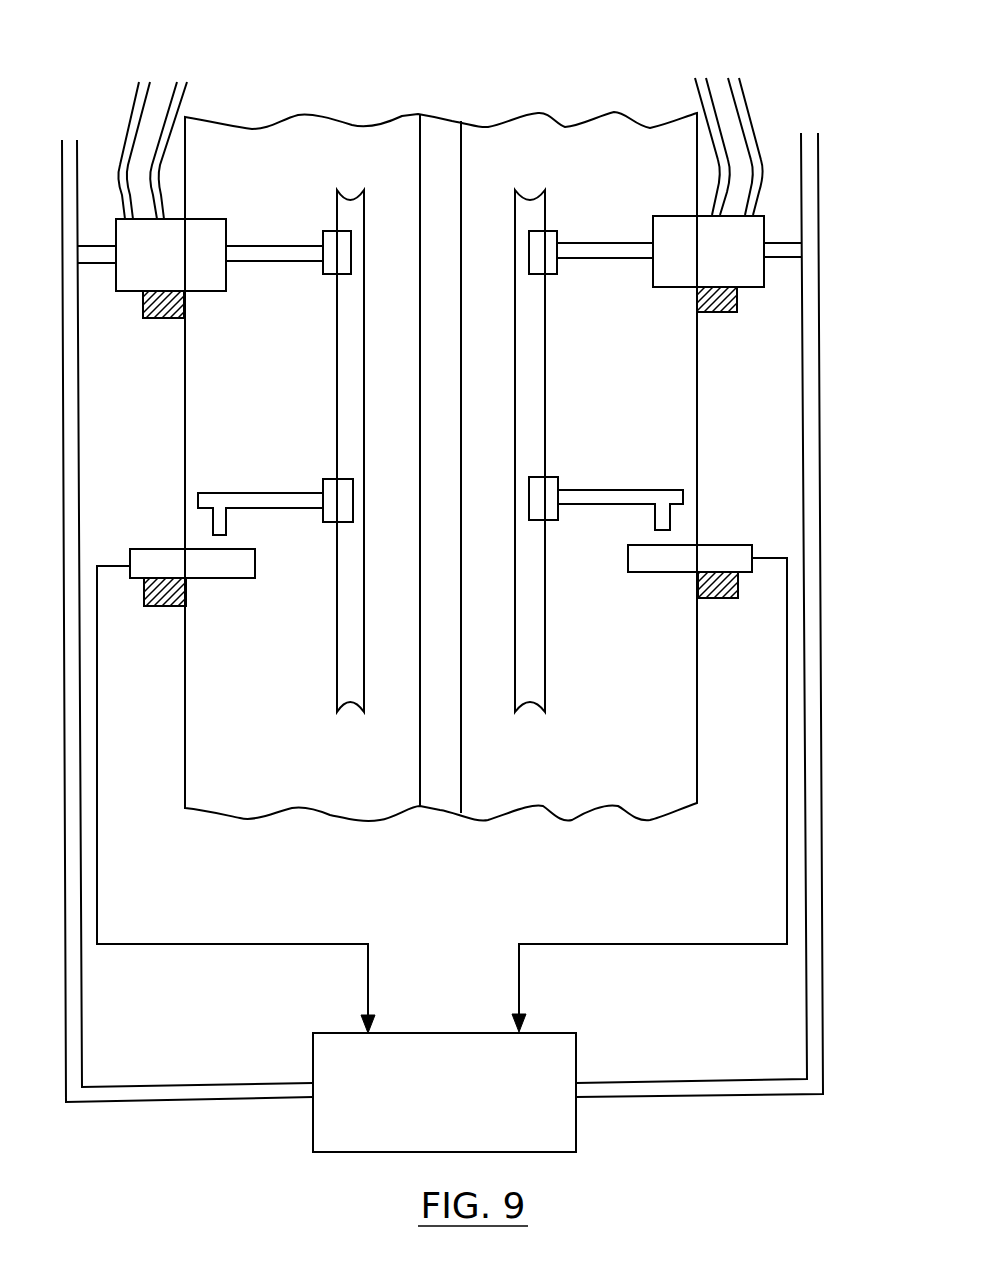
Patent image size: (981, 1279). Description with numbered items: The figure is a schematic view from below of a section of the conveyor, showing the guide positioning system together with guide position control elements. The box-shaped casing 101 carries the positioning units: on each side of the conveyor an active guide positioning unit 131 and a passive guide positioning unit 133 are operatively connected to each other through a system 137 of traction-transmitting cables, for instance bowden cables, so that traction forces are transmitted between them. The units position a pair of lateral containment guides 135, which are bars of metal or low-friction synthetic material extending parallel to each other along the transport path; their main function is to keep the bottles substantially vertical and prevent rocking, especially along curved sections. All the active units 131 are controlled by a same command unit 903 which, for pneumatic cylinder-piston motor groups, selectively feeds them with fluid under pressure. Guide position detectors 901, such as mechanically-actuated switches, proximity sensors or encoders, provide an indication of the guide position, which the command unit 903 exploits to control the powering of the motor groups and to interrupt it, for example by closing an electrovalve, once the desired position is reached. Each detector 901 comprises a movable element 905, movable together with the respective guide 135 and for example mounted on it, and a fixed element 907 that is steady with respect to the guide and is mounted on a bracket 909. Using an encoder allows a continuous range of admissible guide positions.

The box-shaped casing 101 is at (228, 824).
The active guide positioning unit 131 is at (440, 236).
The passive guide positioning unit 133 is at (212, 218).
The lateral containment guide 135 is at (337, 432).
The system of traction-transmitting cables 137 is at (157, 70).
The guide position detector 901 is at (439, 549).
The command unit 903 is at (578, 1057).
The movable element 905 is at (212, 522).
The fixed element 907 is at (203, 580).
The bracket 909 is at (157, 607).